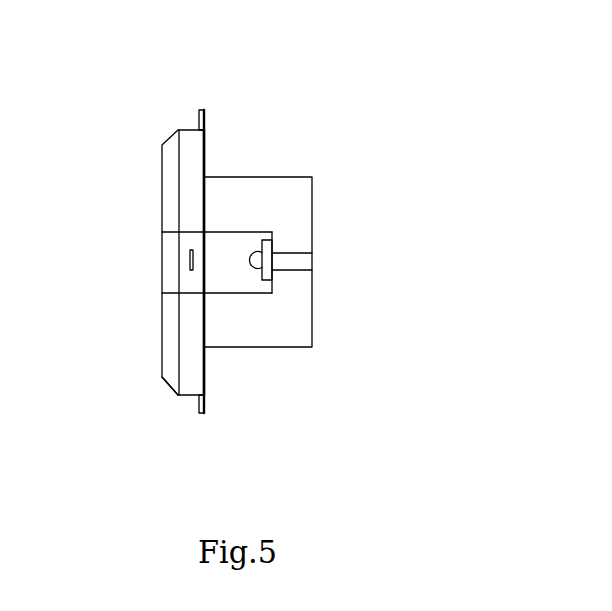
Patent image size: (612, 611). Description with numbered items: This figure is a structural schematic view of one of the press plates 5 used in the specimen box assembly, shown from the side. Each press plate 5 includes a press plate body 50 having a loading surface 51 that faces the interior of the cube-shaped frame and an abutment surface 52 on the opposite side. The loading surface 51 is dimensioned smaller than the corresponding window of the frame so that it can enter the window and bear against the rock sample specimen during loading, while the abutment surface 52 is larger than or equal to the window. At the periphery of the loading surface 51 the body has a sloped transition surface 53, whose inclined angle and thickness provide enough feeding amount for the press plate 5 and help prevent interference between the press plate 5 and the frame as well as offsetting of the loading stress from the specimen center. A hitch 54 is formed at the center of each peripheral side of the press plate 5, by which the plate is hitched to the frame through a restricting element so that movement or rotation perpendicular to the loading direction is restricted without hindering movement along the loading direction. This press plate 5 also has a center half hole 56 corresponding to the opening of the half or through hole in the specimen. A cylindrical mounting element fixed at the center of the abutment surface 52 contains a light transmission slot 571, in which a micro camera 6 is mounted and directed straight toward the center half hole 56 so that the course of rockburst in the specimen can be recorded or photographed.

The press plate 5 is at (115, 120).
The press plate body 50 is at (198, 208).
The loading surface 51 is at (160, 320).
The abutment surface 52 is at (205, 370).
The sloped transition surface 53 is at (168, 387).
The hitch 54 is at (206, 118).
The center half hole 56 is at (168, 263).
The light transmission slot 571 is at (242, 280).
The micro camera 6 is at (264, 258).